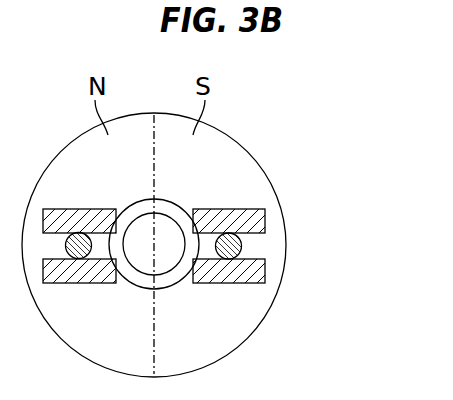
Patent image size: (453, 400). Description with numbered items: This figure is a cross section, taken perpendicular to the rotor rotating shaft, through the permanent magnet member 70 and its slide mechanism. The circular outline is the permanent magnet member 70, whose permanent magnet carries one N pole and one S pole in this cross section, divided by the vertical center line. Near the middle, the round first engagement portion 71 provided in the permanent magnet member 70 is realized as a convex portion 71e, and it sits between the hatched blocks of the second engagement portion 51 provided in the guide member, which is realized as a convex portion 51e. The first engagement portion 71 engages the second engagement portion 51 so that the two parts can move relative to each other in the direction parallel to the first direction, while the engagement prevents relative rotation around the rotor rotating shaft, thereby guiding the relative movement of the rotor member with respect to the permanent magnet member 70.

The permanent magnet member 70 is at (238, 327).
The second engagement portion 51 is at (255, 223).
The convex portion 51e is at (257, 268).
The first engagement portion 71 is at (237, 246).
The convex portion 71e is at (79, 246).